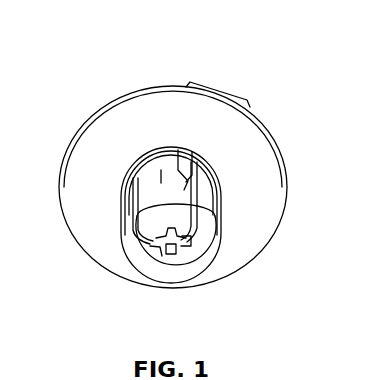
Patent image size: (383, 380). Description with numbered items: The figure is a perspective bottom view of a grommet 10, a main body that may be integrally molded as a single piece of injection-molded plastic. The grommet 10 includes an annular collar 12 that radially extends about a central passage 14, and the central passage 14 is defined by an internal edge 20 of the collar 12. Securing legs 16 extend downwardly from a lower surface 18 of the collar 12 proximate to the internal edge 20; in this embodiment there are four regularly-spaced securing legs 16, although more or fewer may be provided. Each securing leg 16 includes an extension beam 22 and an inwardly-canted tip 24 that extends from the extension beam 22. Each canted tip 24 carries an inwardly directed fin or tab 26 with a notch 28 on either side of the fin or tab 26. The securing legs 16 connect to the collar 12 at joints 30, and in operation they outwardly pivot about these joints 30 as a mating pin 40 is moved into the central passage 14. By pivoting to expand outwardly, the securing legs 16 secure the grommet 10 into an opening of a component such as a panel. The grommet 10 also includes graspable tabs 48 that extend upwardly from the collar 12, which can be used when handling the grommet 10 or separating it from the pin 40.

The grommet 10 is at (98, 33).
The annular collar 12 is at (284, 150).
The central passage 14 is at (161, 183).
The securing legs 16 is at (137, 177).
The lower surface 18 is at (87, 230).
The internal edge 20 is at (147, 157).
The extension beam 22 is at (145, 185).
The inwardly-canted tip 24 is at (211, 256).
The fin or tab 26 is at (186, 176).
The notch 28 is at (158, 268).
The joints 30 is at (164, 160).
The pin 40 is at (55, 377).
The graspable tabs 48 is at (197, 79).